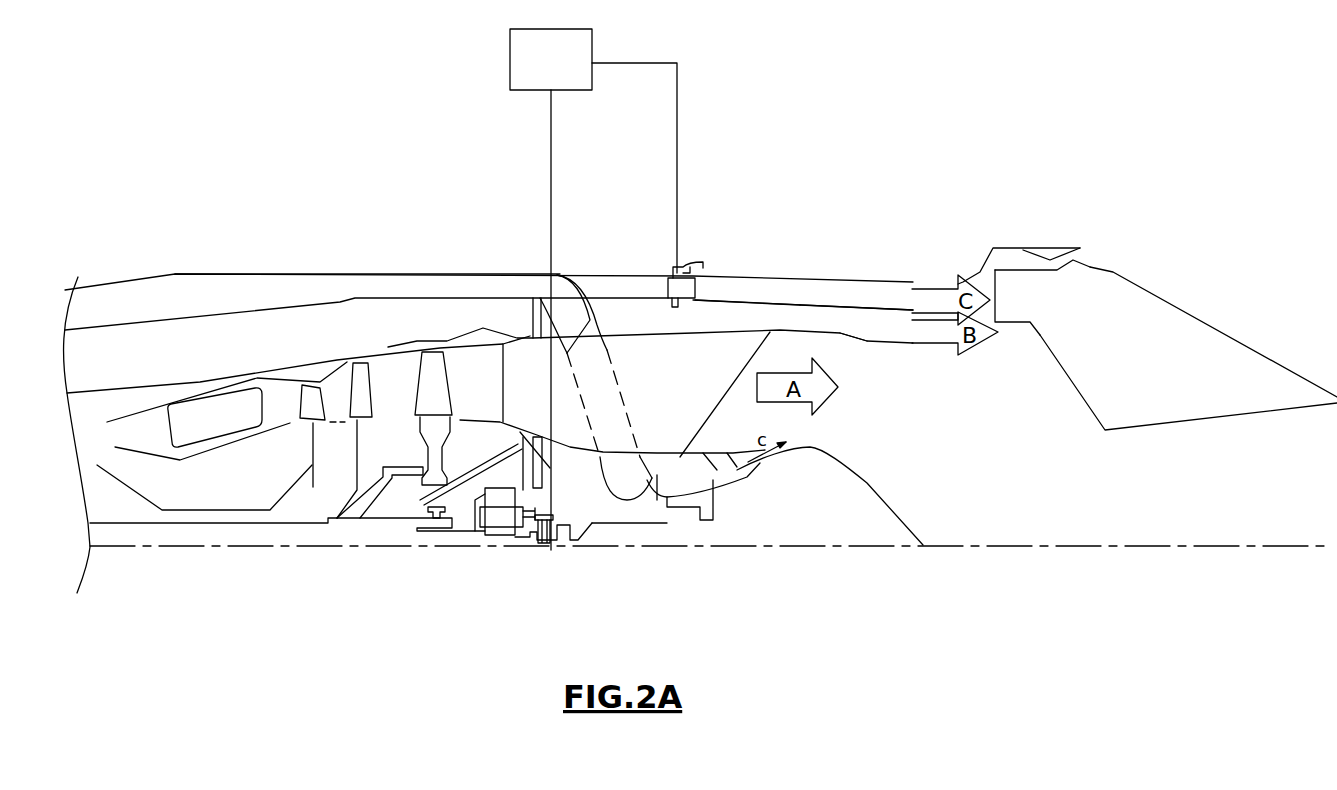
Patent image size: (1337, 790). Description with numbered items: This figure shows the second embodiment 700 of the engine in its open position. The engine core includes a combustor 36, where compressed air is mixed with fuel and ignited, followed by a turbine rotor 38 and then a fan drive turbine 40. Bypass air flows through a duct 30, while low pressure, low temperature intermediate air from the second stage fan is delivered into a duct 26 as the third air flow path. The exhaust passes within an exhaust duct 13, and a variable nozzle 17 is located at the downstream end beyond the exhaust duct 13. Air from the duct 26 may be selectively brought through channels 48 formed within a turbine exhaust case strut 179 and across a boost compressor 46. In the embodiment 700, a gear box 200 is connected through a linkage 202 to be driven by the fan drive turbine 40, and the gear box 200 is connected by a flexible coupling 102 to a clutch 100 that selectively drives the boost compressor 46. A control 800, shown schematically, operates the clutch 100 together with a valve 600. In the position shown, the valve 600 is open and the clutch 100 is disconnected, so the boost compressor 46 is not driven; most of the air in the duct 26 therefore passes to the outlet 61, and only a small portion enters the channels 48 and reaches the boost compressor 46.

The second embodiment 700 is at (126, 177).
The control 800 is at (593, 151).
The valve 600 is at (667, 288).
The duct 30 is at (305, 327).
The combustor 36 is at (213, 417).
The turbine rotor 38 is at (313, 403).
The fan drive turbine 40 is at (435, 388).
The channels 48 is at (583, 327).
The boost compressor 46 is at (677, 480).
The turbine exhaust case strut 179 is at (727, 347).
The duct 26 is at (790, 297).
The exhaust duct 13 is at (868, 343).
The outlet 61 is at (897, 293).
The variable nozzle 17 is at (1160, 338).
The gear box 200 is at (508, 500).
The linkage 202 is at (403, 525).
The flexible coupling 102 is at (533, 547).
The clutch 100 is at (551, 550).